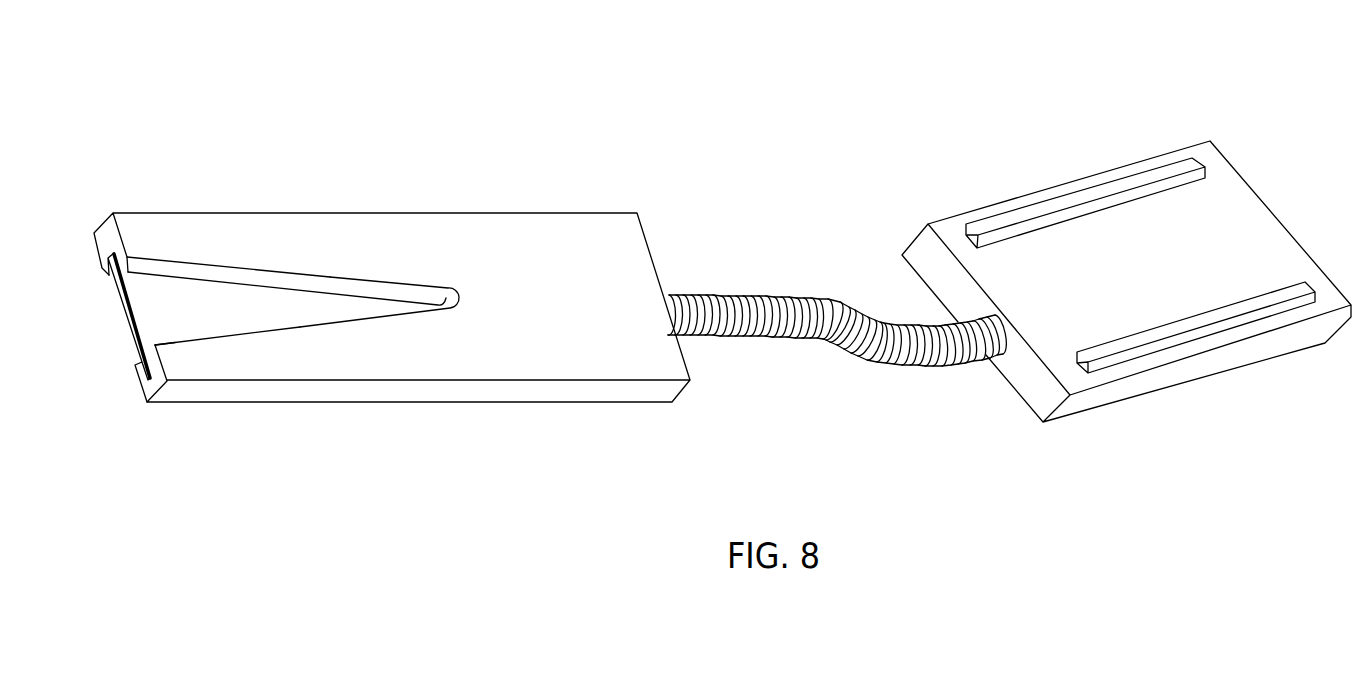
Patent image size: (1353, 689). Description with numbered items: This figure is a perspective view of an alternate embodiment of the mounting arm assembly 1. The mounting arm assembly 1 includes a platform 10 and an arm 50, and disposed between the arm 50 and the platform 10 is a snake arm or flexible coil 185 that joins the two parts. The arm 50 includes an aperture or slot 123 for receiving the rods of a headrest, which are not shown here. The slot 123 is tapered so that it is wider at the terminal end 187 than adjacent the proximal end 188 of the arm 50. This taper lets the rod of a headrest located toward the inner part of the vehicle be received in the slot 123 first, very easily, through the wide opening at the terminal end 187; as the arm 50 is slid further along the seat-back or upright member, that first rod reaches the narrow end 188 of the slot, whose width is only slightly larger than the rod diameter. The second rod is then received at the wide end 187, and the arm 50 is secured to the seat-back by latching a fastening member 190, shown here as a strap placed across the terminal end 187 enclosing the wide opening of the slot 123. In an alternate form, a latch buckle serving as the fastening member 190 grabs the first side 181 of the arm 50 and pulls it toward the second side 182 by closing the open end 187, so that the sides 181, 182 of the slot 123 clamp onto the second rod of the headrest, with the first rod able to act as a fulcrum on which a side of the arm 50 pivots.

The mounting arm assembly 1 is at (566, 95).
The platform 10 is at (1272, 176).
The arm 50 is at (438, 199).
The slot 123 is at (205, 272).
The first side 181 is at (290, 259).
The second side 182 is at (318, 366).
The flexible coil 185 is at (820, 337).
The terminal end 187 is at (180, 335).
The proximal end 188 is at (443, 297).
The fastening member 190 is at (123, 308).